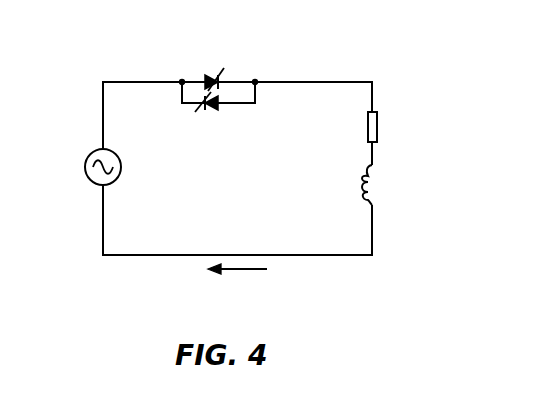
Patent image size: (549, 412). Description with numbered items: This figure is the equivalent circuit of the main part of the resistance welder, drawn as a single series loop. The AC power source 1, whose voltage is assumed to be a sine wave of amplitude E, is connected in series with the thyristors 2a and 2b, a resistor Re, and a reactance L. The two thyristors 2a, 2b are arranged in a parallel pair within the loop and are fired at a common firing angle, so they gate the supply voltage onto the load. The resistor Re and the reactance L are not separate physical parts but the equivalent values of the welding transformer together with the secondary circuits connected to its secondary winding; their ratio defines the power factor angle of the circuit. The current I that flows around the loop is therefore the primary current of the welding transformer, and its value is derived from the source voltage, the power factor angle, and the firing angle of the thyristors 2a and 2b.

The AC power source 1 is at (120, 174).
The thyristor 2a is at (224, 68).
The thyristor 2b is at (211, 110).
The resistor Re is at (378, 127).
The reactance L is at (370, 186).
The current I is at (246, 270).